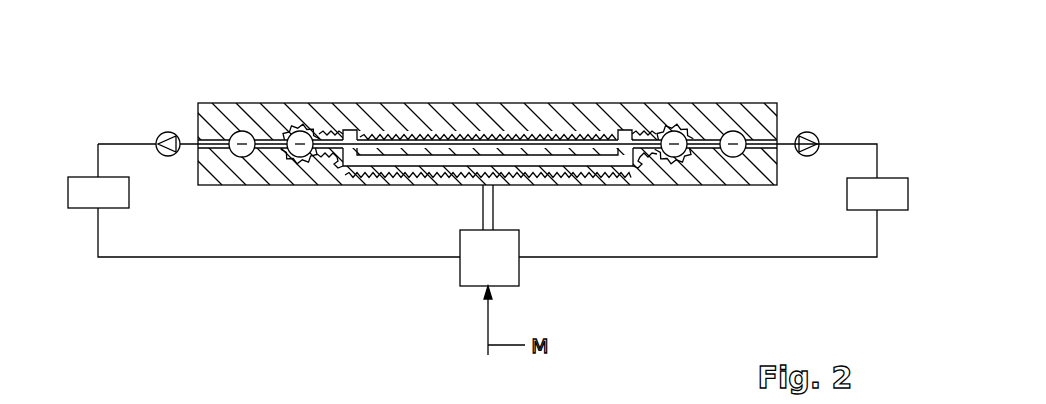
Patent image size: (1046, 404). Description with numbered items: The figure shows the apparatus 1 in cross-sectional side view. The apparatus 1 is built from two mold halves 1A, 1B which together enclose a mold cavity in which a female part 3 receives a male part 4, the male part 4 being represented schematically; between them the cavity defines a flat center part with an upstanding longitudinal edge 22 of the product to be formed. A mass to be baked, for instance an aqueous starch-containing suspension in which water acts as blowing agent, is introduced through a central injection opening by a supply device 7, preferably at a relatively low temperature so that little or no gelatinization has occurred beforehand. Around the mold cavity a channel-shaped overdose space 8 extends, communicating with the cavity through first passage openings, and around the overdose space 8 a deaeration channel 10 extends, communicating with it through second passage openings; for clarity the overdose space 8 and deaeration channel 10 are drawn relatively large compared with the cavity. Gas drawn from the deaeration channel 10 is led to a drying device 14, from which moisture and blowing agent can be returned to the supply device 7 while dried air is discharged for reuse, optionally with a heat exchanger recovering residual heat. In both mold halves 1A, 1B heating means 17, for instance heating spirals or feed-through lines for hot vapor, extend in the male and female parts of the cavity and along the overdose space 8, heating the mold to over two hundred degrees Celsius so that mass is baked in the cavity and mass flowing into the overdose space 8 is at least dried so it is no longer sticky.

The apparatus 1 is at (178, 86).
The mold half 1A is at (775, 103).
The mold half 1B is at (775, 185).
The female part 3 is at (590, 162).
The male part 4 is at (78, 198).
The supply device 7 is at (468, 268).
The overdose space 8 is at (674, 126).
The deaeration channel 10 is at (733, 131).
The drying device 14 is at (898, 200).
The heating means 17 is at (292, 126).
The upstanding longitudinal edge 22 is at (350, 130).